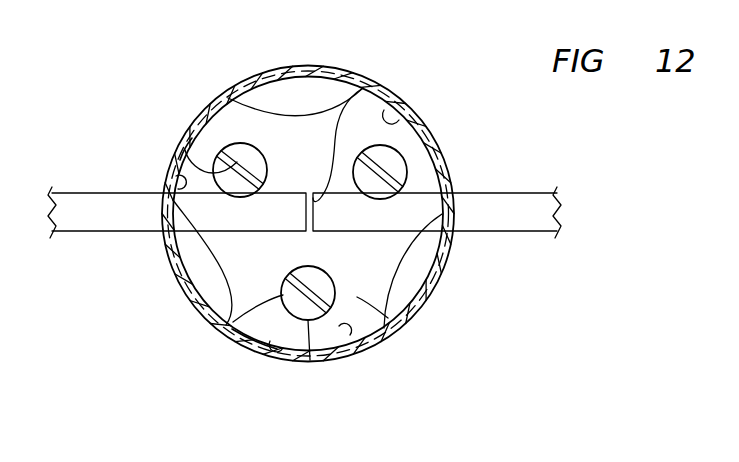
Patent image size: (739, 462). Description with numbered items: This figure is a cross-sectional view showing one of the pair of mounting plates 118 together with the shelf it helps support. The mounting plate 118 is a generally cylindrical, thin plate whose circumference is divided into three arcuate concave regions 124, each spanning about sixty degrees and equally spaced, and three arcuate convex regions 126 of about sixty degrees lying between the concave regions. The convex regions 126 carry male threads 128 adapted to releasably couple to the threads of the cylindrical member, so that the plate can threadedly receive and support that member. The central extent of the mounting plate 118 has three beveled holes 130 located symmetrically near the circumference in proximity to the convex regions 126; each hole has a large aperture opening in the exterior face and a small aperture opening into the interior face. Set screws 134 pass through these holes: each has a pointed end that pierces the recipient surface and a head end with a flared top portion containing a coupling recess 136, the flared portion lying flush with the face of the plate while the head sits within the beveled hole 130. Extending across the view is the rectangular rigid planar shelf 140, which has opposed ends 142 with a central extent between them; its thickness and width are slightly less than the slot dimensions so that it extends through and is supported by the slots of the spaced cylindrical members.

The mounting plate 118 is at (407, 320).
The arcuate concave region 124 is at (293, 92).
The arcuate convex region 126 is at (175, 190).
The male threads 128 is at (398, 116).
The beveled hole 130 is at (310, 360).
The set screw 134 is at (192, 160).
The coupling recess 136 is at (240, 148).
The rigid planar shelf 140 is at (518, 231).
The opposed end 142 is at (365, 88).